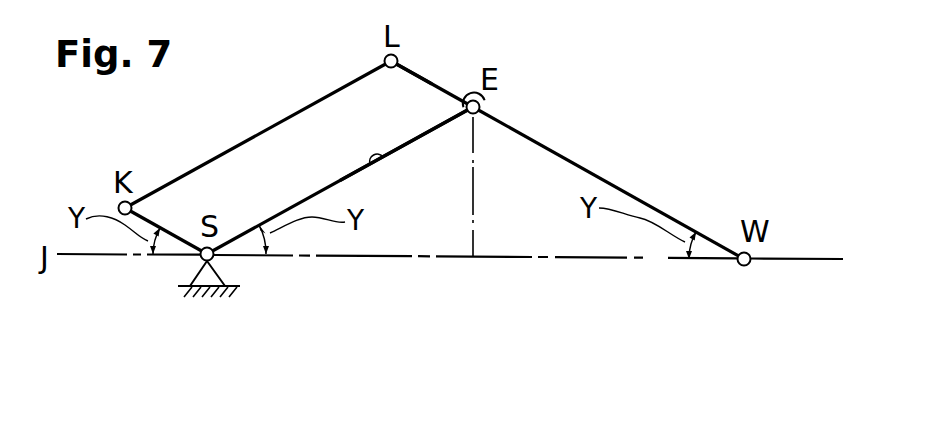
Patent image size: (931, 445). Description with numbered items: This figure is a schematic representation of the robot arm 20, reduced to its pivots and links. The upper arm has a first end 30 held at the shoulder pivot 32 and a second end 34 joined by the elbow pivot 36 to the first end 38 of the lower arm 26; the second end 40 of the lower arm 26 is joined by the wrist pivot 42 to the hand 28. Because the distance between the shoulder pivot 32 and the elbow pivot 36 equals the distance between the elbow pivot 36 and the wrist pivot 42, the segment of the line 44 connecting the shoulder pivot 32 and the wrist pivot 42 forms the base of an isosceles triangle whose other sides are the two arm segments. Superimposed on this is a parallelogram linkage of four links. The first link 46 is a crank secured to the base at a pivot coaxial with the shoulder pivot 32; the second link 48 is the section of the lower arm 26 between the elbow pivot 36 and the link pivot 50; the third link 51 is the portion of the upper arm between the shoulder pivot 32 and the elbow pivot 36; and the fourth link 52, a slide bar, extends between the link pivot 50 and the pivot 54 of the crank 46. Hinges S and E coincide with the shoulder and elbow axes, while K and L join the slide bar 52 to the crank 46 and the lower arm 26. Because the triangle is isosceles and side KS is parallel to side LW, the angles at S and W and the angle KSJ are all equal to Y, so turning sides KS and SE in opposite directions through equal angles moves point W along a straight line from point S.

The robot arm 20 is at (672, 127).
The lower arm 26 is at (559, 153).
The hand 28 is at (810, 258).
The first end 30 is at (230, 242).
The shoulder pivot 32 is at (199, 262).
The second end 34 is at (432, 132).
The elbow pivot 36 is at (484, 103).
The first end 38 is at (413, 76).
The second end 40 is at (705, 237).
The wrist pivot 42 is at (746, 267).
The line 44 is at (494, 256).
The first link 46 is at (167, 252).
The second link 48 is at (439, 84).
The link pivot 50 is at (399, 56).
The third link 51 is at (384, 160).
The fourth link 52 is at (250, 138).
The pivot 54 is at (118, 201).